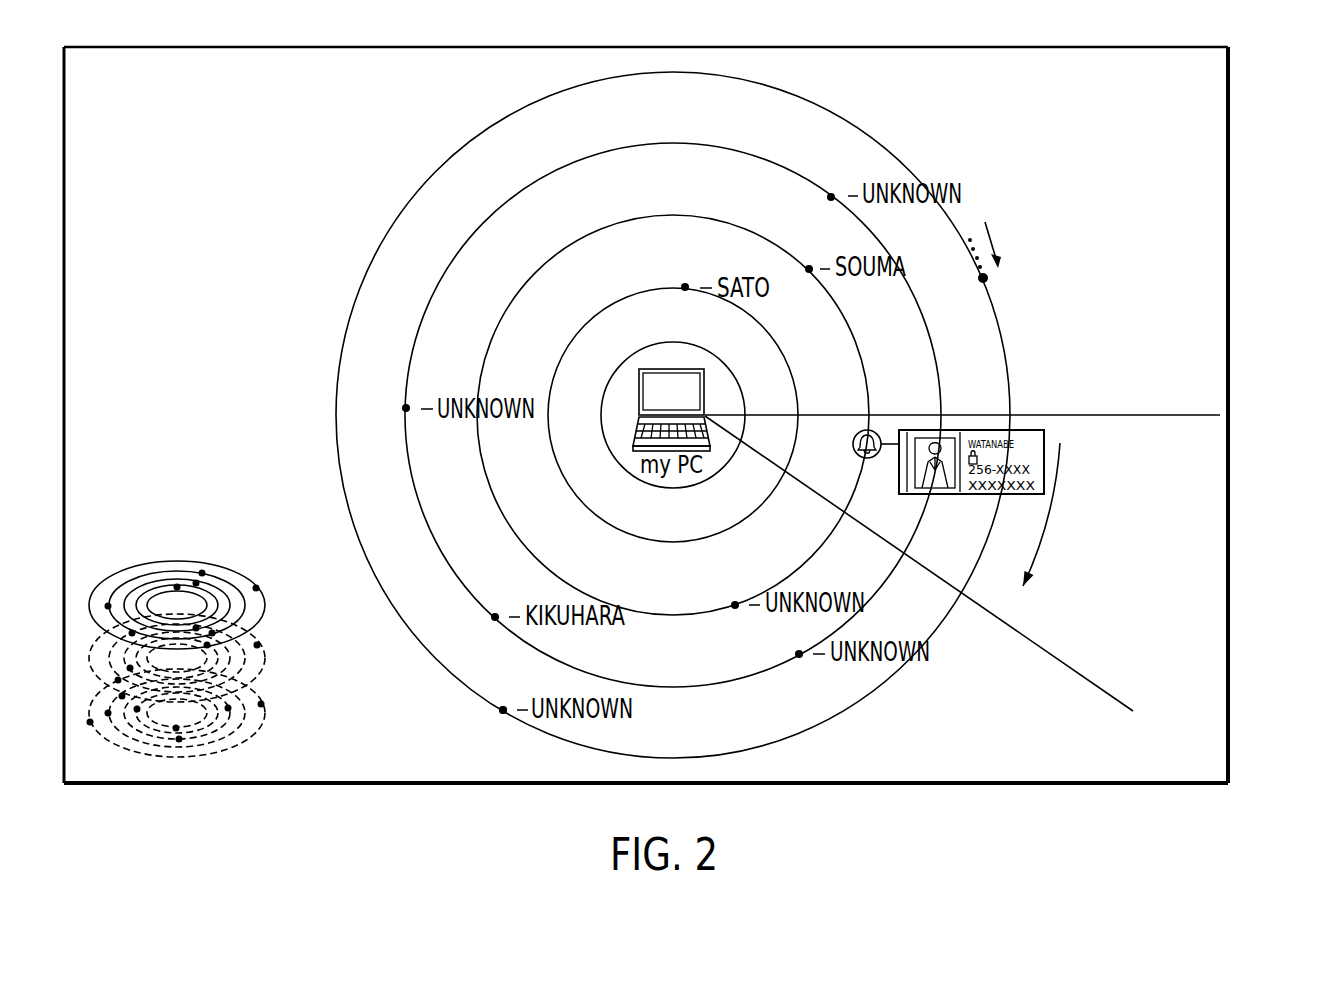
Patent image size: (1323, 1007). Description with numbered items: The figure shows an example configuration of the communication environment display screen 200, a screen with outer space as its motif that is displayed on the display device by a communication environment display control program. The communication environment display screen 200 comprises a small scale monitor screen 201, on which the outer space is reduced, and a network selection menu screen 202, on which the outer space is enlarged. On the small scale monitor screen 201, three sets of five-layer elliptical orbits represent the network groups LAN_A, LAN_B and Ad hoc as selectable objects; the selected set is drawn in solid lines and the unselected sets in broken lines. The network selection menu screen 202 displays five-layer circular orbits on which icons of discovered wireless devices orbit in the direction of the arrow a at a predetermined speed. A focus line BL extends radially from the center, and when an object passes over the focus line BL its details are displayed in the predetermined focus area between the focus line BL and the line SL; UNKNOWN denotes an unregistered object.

The communication environment display screen 200 is at (1231, 274).
The network type selection screen (small scale monitor screen) 201 is at (237, 760).
The main screen (network selection menu screen) 202 is at (845, 730).
The focus line BL is at (1139, 413).
The focus area boundary line SL is at (1065, 661).
The orbit direction arrow a is at (1053, 497).